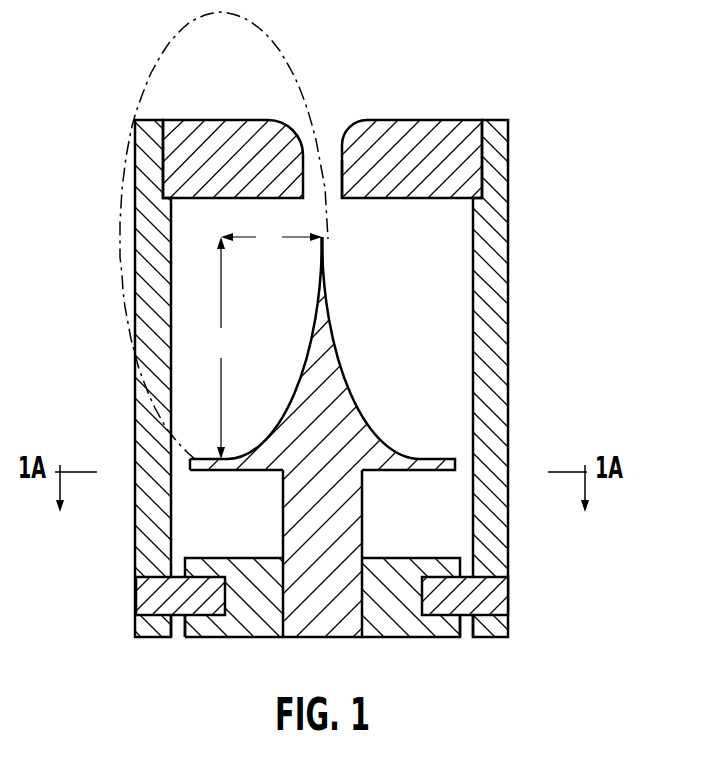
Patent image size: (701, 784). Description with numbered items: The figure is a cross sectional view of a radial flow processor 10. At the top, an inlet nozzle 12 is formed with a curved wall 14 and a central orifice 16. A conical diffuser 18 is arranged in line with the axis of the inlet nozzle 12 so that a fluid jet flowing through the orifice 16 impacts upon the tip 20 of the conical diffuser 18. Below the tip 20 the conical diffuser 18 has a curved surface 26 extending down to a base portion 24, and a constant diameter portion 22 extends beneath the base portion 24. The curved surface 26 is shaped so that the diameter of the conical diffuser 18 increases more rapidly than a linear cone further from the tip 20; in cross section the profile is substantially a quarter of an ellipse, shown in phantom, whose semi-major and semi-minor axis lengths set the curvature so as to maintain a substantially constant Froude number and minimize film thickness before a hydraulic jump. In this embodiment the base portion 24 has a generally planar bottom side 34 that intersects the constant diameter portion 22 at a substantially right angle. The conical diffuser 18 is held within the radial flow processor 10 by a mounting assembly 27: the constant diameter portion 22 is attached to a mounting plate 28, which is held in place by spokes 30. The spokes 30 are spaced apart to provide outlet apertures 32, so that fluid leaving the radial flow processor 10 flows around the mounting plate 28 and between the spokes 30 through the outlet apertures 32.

The radial flow processor 10 is at (341, 352).
The inlet nozzle 12 is at (322, 128).
The curved wall 14 is at (345, 132).
The orifice 16 is at (330, 197).
The conical diffuser 18 is at (322, 437).
The tip 20 is at (324, 240).
The constant diameter portion 22 is at (363, 511).
The base portion 24 is at (429, 458).
The curved surface 26 is at (282, 410).
The mounting assembly 27 is at (462, 538).
The mounting plate 28 is at (233, 557).
The spokes 30 is at (178, 617).
The outlet apertures 32 is at (182, 560).
The bottom side 34 is at (235, 474).